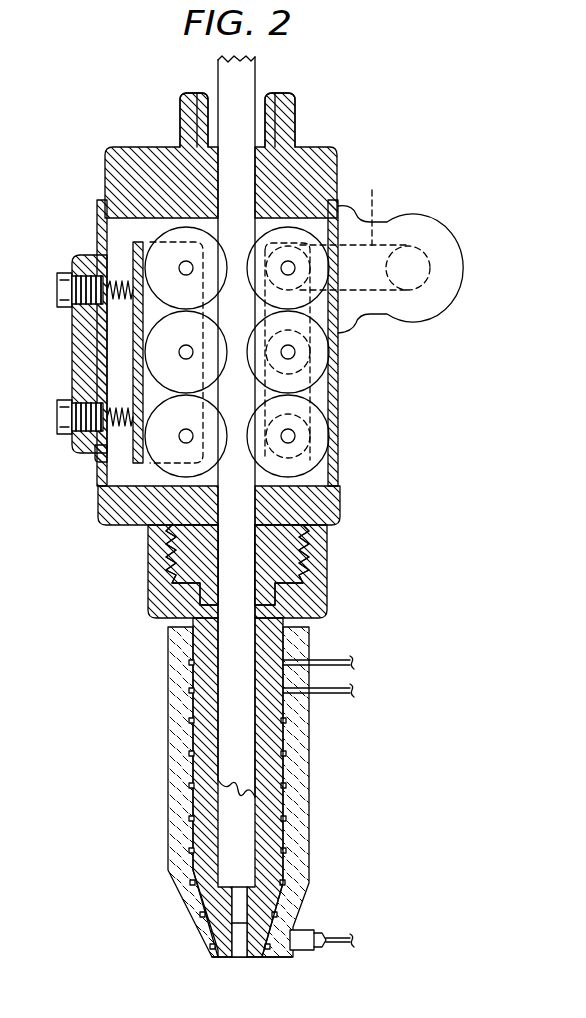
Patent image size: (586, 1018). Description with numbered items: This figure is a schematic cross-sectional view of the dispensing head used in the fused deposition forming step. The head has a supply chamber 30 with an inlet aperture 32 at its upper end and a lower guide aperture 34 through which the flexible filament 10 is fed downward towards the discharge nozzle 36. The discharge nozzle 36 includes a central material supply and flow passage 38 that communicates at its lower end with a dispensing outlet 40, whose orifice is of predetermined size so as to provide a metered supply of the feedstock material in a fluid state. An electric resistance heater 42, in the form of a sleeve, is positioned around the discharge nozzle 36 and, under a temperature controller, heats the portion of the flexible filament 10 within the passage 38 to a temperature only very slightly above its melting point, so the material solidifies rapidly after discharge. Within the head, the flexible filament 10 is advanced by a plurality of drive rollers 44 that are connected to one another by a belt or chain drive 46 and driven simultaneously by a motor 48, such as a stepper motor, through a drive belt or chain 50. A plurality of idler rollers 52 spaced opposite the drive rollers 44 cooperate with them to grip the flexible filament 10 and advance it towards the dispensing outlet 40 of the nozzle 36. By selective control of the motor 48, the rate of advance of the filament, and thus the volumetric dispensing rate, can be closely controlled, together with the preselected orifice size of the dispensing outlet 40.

The flexible filament 10 is at (245, 759).
The supply chamber 30 is at (337, 463).
The inlet aperture 32 is at (218, 167).
The lower guide aperture 34 is at (150, 522).
The discharge nozzle 36 is at (193, 772).
The central material supply and flow passage 38 is at (255, 868).
The dispensing outlet 40 is at (238, 947).
The electric resistance heater 42 is at (168, 843).
The drive rollers 44 is at (343, 337).
The belt or chain drive 46 is at (335, 378).
The motor 48 is at (448, 228).
The drive belt or chain 50 is at (372, 190).
The idler rollers 52 is at (160, 240).